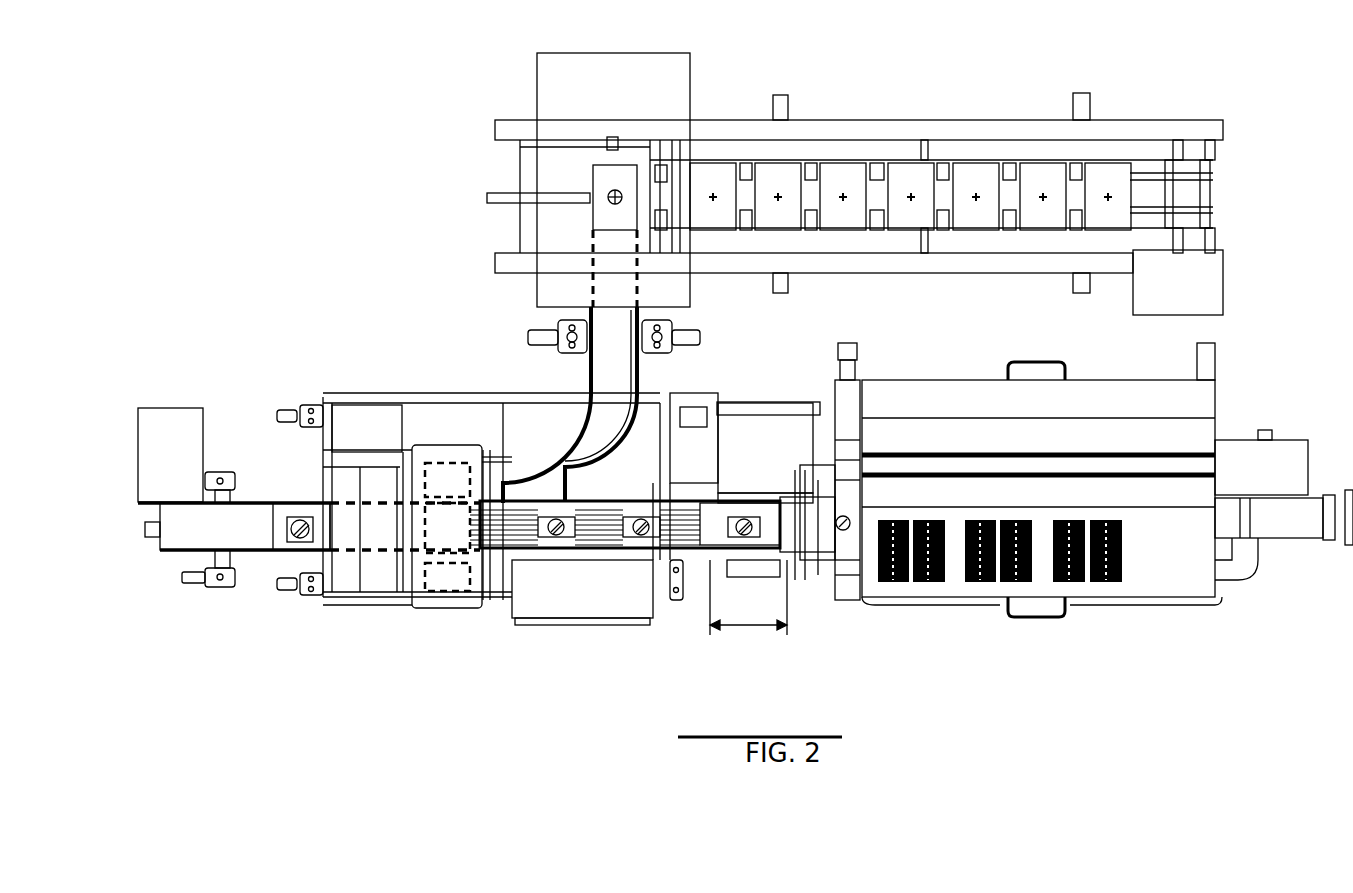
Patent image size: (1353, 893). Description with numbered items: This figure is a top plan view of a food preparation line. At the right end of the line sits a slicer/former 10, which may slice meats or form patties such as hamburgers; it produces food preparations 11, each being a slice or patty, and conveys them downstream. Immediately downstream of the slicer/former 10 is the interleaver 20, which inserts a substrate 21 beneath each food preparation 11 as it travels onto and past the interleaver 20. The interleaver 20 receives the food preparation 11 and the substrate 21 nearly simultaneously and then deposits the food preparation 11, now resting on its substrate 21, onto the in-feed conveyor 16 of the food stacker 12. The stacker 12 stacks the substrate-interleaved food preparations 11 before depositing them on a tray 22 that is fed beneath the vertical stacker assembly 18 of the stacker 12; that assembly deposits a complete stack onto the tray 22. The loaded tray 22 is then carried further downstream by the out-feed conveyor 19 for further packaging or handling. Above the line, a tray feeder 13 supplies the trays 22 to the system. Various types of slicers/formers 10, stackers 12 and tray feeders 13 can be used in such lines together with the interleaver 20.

The slicer/former 10 is at (1099, 598).
The food preparation 11 is at (553, 515).
The food stacker 12 is at (487, 634).
The tray feeder 13 is at (530, 162).
The in-feed conveyor 16 is at (660, 560).
The vertical stacker assembly 18 is at (425, 446).
The out-feed conveyor 19 is at (275, 506).
The interleaver 20 is at (838, 397).
The substrate 21 is at (563, 516).
The tray 22 is at (620, 172).